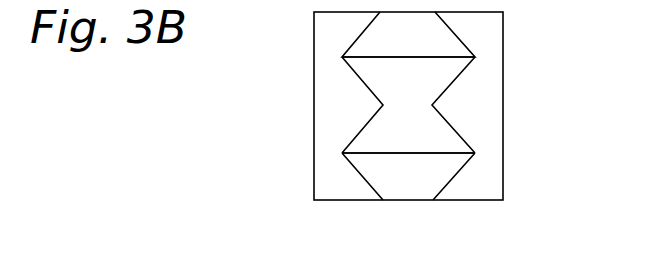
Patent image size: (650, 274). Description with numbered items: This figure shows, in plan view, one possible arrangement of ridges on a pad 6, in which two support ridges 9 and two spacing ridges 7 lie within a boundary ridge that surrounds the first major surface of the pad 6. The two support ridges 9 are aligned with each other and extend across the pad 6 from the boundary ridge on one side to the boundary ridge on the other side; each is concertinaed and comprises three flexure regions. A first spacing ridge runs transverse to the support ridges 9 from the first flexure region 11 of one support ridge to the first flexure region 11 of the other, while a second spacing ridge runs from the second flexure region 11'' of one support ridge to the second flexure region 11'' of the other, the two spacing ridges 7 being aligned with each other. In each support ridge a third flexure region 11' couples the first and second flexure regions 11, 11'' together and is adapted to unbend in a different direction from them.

The housing 6 is at (342, 200).
The spacing ridge 7 is at (422, 57).
The support ridge 9 is at (355, 140).
The first flexure region 11 is at (473, 59).
The third flexure region 11' is at (488, 108).
The second flexure region 11'' is at (480, 155).